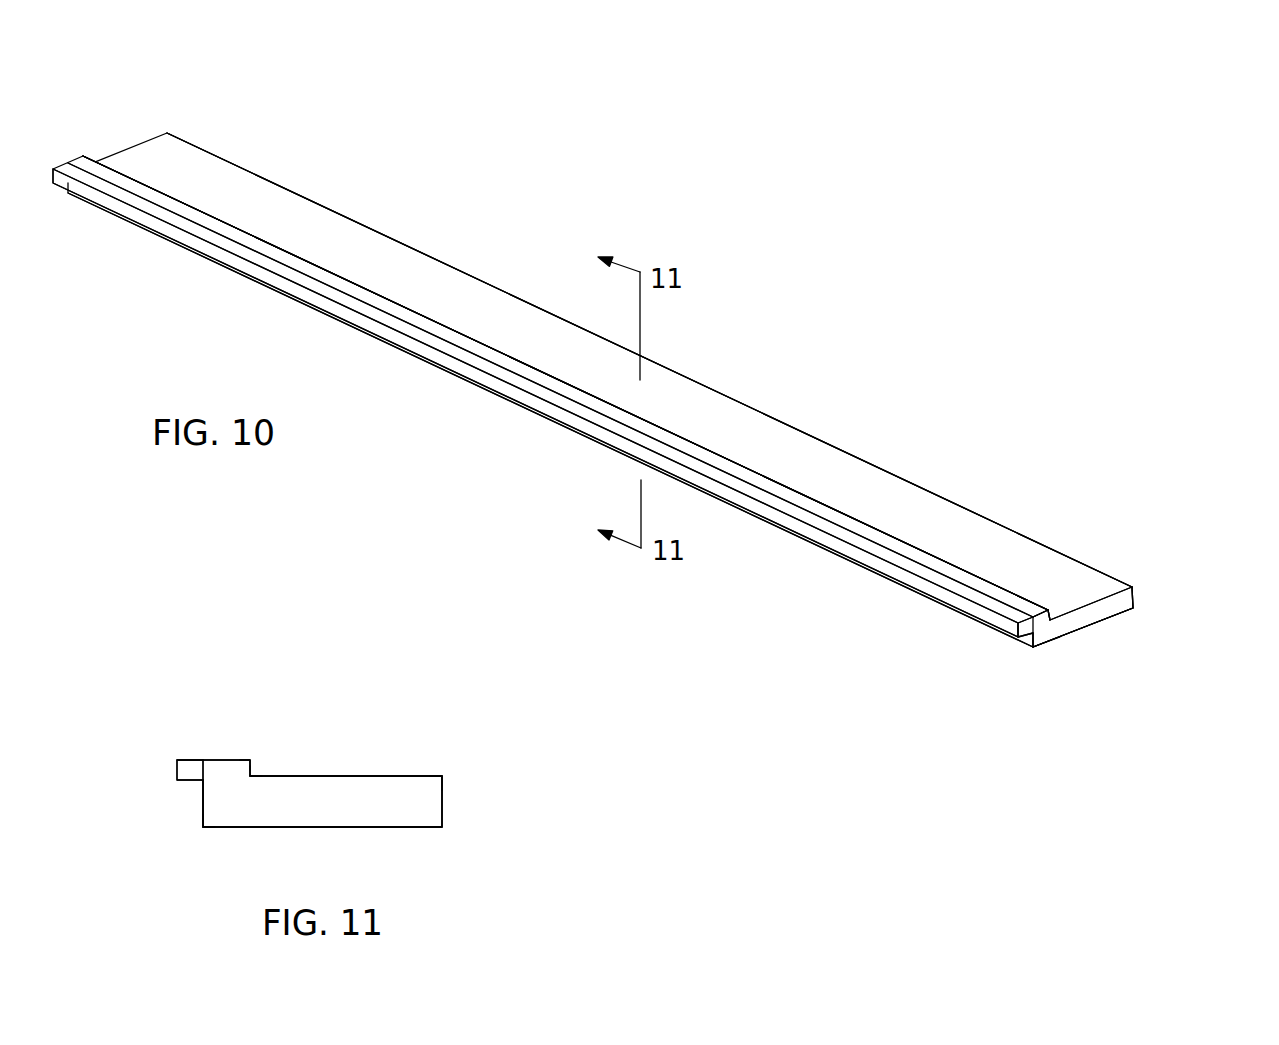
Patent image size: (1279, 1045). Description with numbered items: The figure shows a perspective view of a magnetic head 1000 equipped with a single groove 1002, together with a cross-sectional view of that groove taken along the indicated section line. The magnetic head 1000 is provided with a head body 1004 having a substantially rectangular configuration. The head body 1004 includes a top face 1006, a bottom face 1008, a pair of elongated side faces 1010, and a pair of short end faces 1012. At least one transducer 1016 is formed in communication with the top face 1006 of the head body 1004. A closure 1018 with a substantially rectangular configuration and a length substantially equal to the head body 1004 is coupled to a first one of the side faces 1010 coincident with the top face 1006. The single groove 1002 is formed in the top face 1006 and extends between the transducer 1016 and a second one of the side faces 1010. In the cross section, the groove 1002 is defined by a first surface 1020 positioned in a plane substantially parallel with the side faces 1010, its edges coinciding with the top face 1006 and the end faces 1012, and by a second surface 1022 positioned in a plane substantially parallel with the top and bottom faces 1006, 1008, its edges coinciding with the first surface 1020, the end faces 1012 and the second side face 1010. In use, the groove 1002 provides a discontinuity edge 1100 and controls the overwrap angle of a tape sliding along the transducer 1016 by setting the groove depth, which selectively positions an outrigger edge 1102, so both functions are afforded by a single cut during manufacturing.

In FIG. 10, the magnetic head 1000 is at (960, 298).
In FIG. 11, the magnetic head 1000 is at (393, 652).
In FIG. 10, the single groove 1002 is at (810, 442).
In FIG. 11, the single groove 1002 is at (378, 767).
In FIG. 10, the head body 1004 is at (1034, 648).
In FIG. 11, the head body 1004 is at (202, 830).
In FIG. 10, the top face 1006 is at (986, 582).
In FIG. 11, the top face 1006 is at (232, 758).
In FIG. 10, the bottom face 1008 is at (1082, 629).
In FIG. 11, the bottom face 1008 is at (340, 830).
In FIG. 10, the side faces 1010 is at (1110, 618).
In FIG. 11, the side faces 1010 is at (203, 806).
In FIG. 10, the end faces 1012 is at (1100, 611).
In FIG. 10, the transducer 1016 is at (912, 525).
In FIG. 11, the transducer 1016 is at (204, 745).
In FIG. 10, the closure 1018 is at (52, 167).
In FIG. 11, the closure 1018 is at (176, 758).
In FIG. 11, the first surface 1020 is at (257, 768).
In FIG. 10, the second surface 1022 is at (696, 404).
In FIG. 11, the second surface 1022 is at (337, 776).
In FIG. 11, the discontinuity edge 1100 is at (252, 758).
In FIG. 11, the outrigger edge 1102 is at (443, 773).